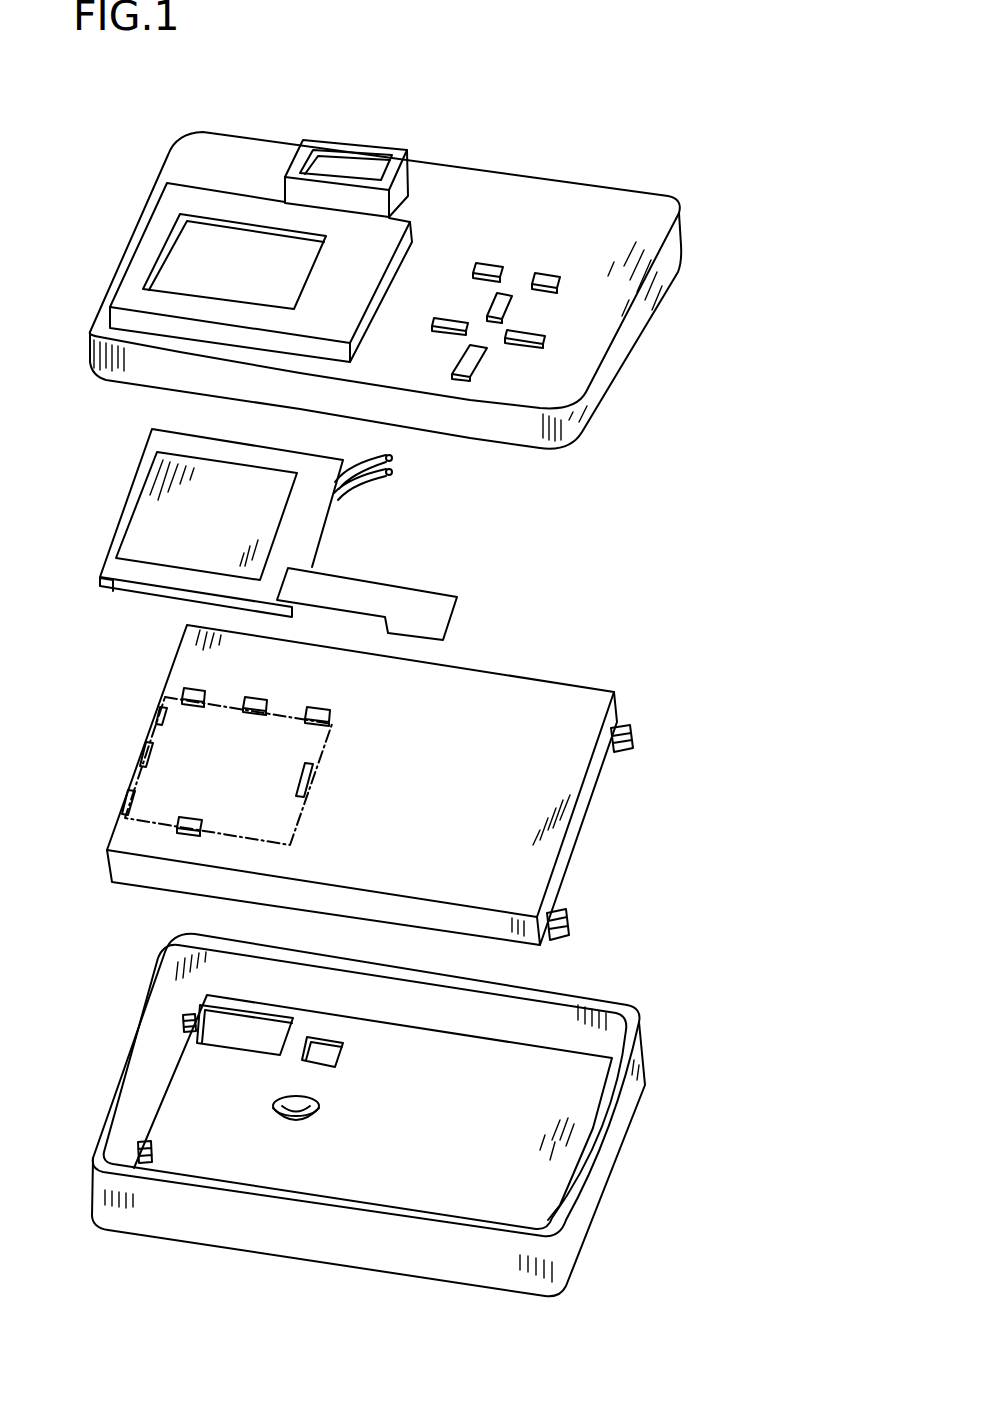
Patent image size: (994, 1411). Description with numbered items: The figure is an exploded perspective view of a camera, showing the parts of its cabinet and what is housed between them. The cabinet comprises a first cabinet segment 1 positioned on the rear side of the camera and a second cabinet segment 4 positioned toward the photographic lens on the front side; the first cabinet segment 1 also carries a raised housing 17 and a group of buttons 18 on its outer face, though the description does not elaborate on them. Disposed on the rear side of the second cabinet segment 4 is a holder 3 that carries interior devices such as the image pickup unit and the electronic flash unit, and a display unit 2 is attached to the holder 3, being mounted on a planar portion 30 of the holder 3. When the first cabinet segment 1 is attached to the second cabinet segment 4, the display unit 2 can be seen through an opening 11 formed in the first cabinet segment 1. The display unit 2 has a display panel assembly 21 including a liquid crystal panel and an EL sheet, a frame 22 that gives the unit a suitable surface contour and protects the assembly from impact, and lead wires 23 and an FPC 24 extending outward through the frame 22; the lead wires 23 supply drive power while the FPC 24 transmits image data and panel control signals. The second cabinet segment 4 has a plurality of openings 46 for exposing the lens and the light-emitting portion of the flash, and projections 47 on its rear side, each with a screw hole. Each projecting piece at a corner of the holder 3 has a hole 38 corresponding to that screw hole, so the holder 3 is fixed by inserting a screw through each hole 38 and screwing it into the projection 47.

The first cabinet segment 1 is at (373, 260).
The opening 11 is at (252, 232).
The viewfinder / projection housing 17 is at (360, 165).
The operation buttons 18 is at (493, 267).
The display unit 2 is at (267, 547).
The display panel assembly 21 is at (200, 532).
The frame 22 is at (126, 574).
The lead wires 23 is at (395, 458).
The FPC 24 is at (428, 606).
The holder 3 is at (359, 785).
The planar portion 30 is at (210, 765).
The hole 38 is at (635, 737).
The second cabinet segment 4 is at (331, 1121).
The openings 46 is at (232, 1043).
The projections 47 is at (182, 1024).